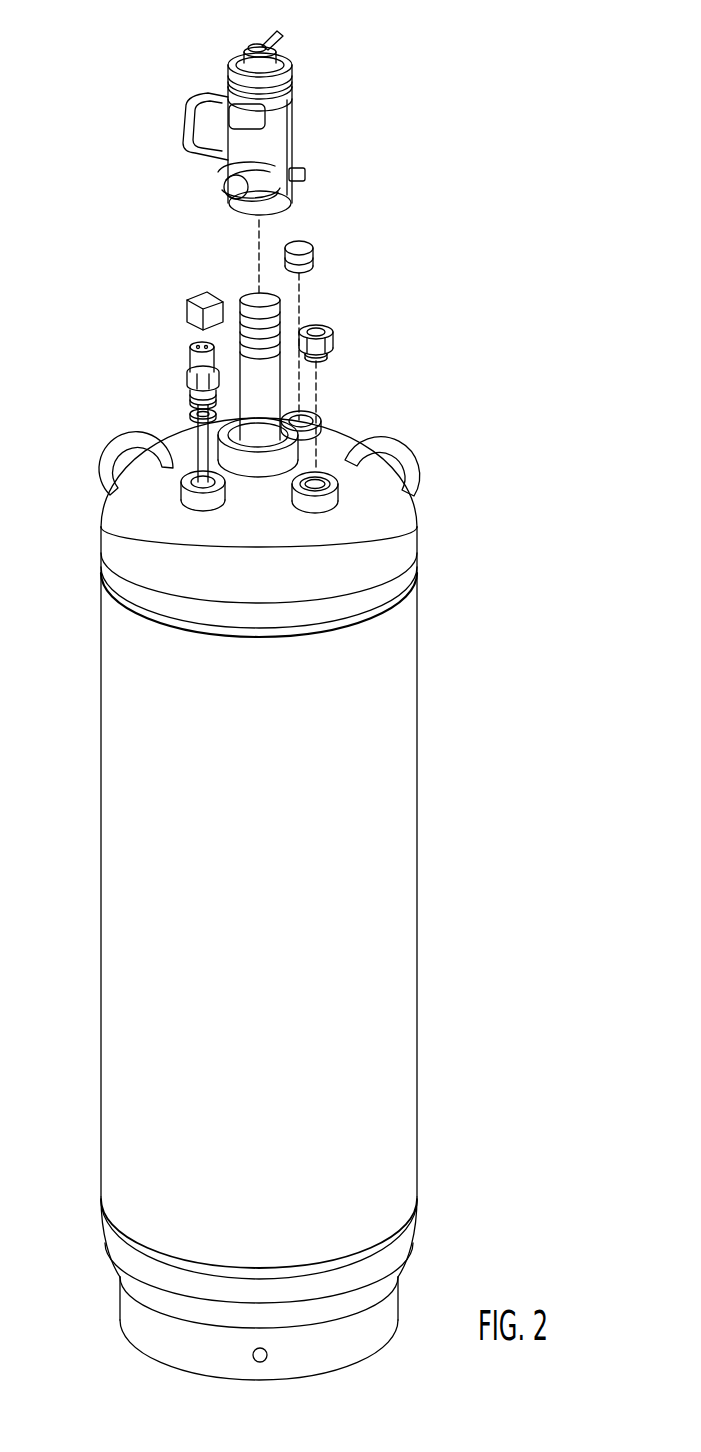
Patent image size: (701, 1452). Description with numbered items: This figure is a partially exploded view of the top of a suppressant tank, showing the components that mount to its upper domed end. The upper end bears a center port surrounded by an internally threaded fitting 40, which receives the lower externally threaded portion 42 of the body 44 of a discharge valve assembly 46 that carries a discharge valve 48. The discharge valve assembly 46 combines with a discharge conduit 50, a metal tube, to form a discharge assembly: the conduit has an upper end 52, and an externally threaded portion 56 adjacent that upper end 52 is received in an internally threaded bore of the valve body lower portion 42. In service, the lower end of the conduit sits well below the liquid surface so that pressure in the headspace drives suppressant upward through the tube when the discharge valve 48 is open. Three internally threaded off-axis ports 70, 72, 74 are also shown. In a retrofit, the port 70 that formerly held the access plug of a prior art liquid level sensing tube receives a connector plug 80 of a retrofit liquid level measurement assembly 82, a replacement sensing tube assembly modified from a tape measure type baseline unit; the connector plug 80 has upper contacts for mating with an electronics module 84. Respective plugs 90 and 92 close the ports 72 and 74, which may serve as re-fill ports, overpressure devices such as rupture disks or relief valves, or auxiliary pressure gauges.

The fitting 40 is at (254, 854).
The lower externally threaded portion 42 is at (278, 200).
The body 44 is at (277, 142).
The discharge valve assembly 46 is at (241, 108).
The discharge valve 48 is at (321, 50).
The discharge conduit 50 is at (332, 402).
The upper end 52 is at (349, 325).
The externally threaded portion 56 is at (293, 312).
The off-axis port 70 is at (123, 497).
The off-axis port 72 is at (358, 404).
The off-axis port 74 is at (386, 502).
The connector plug 80 is at (157, 412).
The retrofit liquid level measurement assembly 82 is at (135, 416).
The electronics module 84 is at (149, 311).
The plug 90 is at (345, 220).
The plug 92 is at (385, 326).